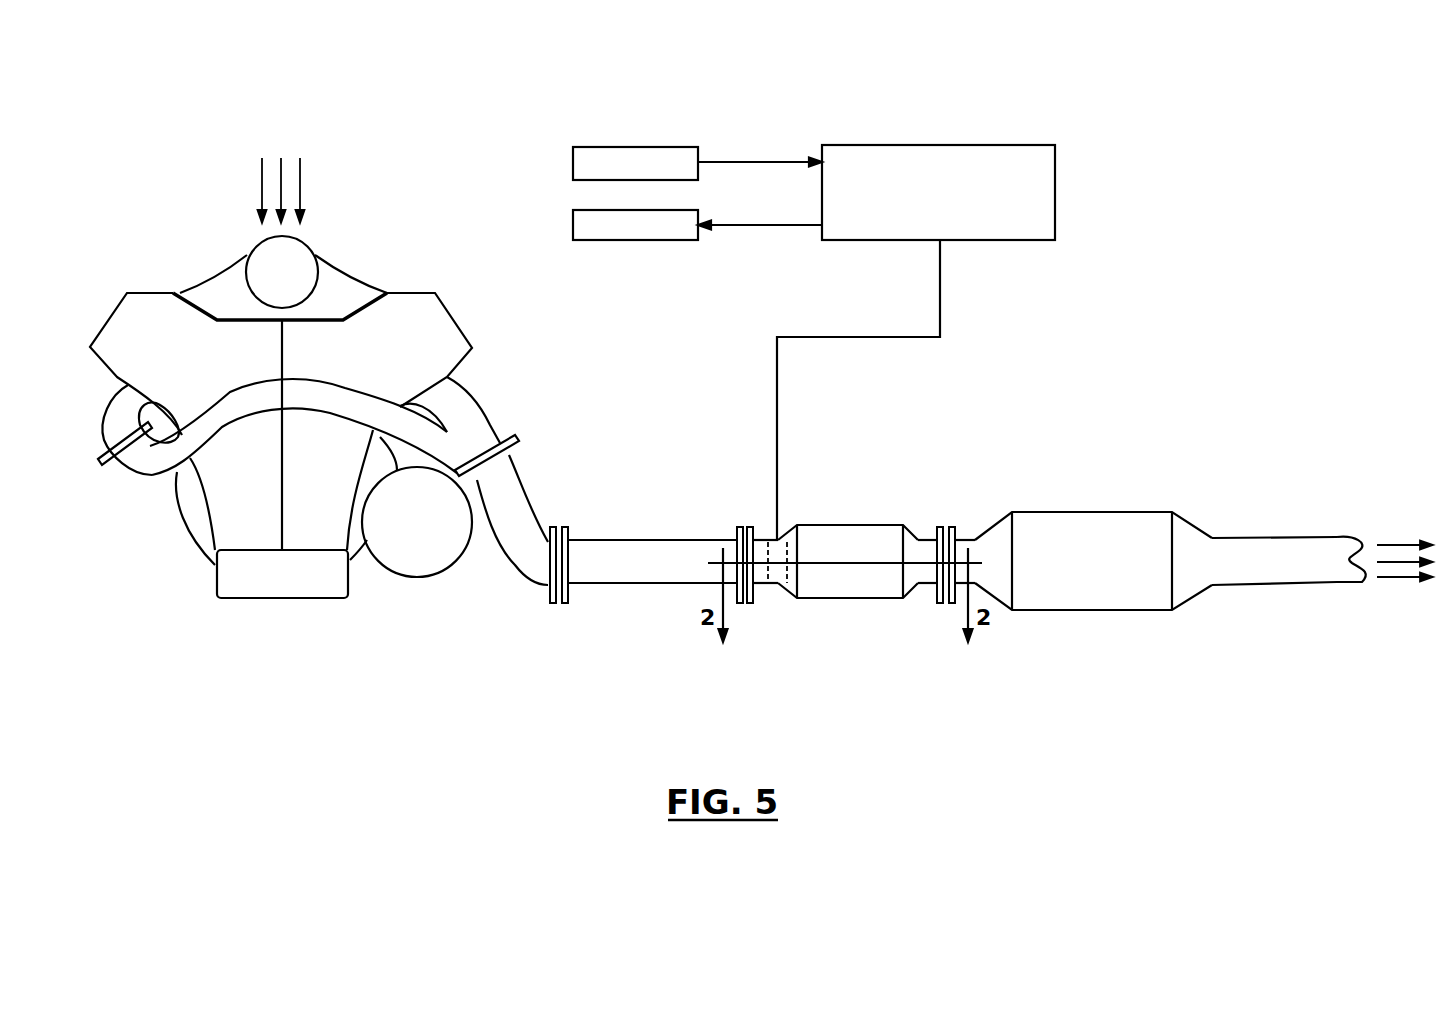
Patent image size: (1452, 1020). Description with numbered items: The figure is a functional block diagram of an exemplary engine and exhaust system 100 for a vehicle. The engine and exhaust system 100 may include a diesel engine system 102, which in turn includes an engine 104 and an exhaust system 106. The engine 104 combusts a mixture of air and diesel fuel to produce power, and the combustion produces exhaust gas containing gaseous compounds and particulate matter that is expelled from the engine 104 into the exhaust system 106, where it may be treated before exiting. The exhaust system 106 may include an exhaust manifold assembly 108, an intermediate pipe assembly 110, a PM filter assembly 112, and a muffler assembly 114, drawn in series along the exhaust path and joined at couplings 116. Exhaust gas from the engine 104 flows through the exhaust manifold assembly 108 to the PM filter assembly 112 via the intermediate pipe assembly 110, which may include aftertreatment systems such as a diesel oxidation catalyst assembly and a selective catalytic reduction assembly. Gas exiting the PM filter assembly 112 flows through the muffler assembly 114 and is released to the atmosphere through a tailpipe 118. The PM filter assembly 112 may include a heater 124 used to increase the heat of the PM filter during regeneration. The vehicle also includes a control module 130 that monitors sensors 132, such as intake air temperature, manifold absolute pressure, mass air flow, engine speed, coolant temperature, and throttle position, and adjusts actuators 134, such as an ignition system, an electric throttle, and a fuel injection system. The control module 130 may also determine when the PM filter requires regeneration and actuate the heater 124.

The engine and exhaust system 100 is at (220, 103).
The diesel engine system 102 is at (312, 370).
The engine 104 is at (464, 313).
The exhaust system 106 is at (486, 395).
The exhaust manifold assembly 108 is at (527, 495).
The intermediate pipe assembly 110 is at (620, 540).
The PM filter assembly 112 is at (850, 525).
The muffler assembly 114 is at (1093, 512).
The flange couplings 116 is at (560, 641).
The tailpipe 118 is at (1303, 537).
The heater 124 is at (771, 524).
The control module 130 is at (940, 145).
The sensors 132 is at (635, 147).
The actuators 134 is at (635, 240).